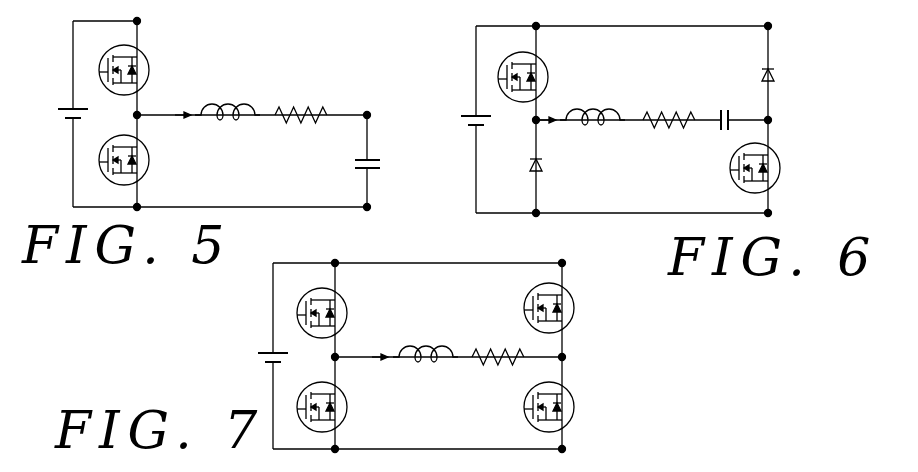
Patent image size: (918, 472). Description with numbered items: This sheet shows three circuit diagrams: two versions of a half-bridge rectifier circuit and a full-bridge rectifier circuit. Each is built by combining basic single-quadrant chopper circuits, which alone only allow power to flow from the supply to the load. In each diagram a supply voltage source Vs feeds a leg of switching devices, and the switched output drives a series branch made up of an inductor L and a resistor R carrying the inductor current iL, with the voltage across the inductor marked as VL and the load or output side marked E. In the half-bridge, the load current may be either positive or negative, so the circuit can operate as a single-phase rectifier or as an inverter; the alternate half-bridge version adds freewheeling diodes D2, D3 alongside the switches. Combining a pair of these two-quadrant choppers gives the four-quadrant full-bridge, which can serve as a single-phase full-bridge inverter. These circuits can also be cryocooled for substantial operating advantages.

In FIG. 5, the supply voltage source Vs is at (61, 121).
In FIG. 6, the supply voltage source Vs is at (465, 127).
In FIG. 7, the supply voltage source Vs is at (263, 364).
In FIG. 5, the inductor current iL is at (183, 103).
In FIG. 6, the inductor current iL is at (548, 108).
In FIG. 7, the inductor current iL is at (380, 345).
In FIG. 5, the inductor L is at (227, 102).
In FIG. 6, the inductor L is at (592, 106).
In FIG. 7, the inductor L is at (425, 345).
In FIG. 5, the resistor R is at (301, 104).
In FIG. 6, the resistor R is at (669, 108).
In FIG. 7, the resistor R is at (498, 346).
In FIG. 5, the capacitor / load voltage E is at (373, 169).
In FIG. 6, the capacitor / load voltage E is at (723, 109).
In FIG. 5, the inductor voltage VL is at (260, 162).
In FIG. 6, the inductor voltage VL is at (634, 154).
In FIG. 7, the inductor voltage VL is at (438, 386).
In FIG. 6, the diode D2 is at (522, 168).
In FIG. 6, the diode D3 is at (779, 76).